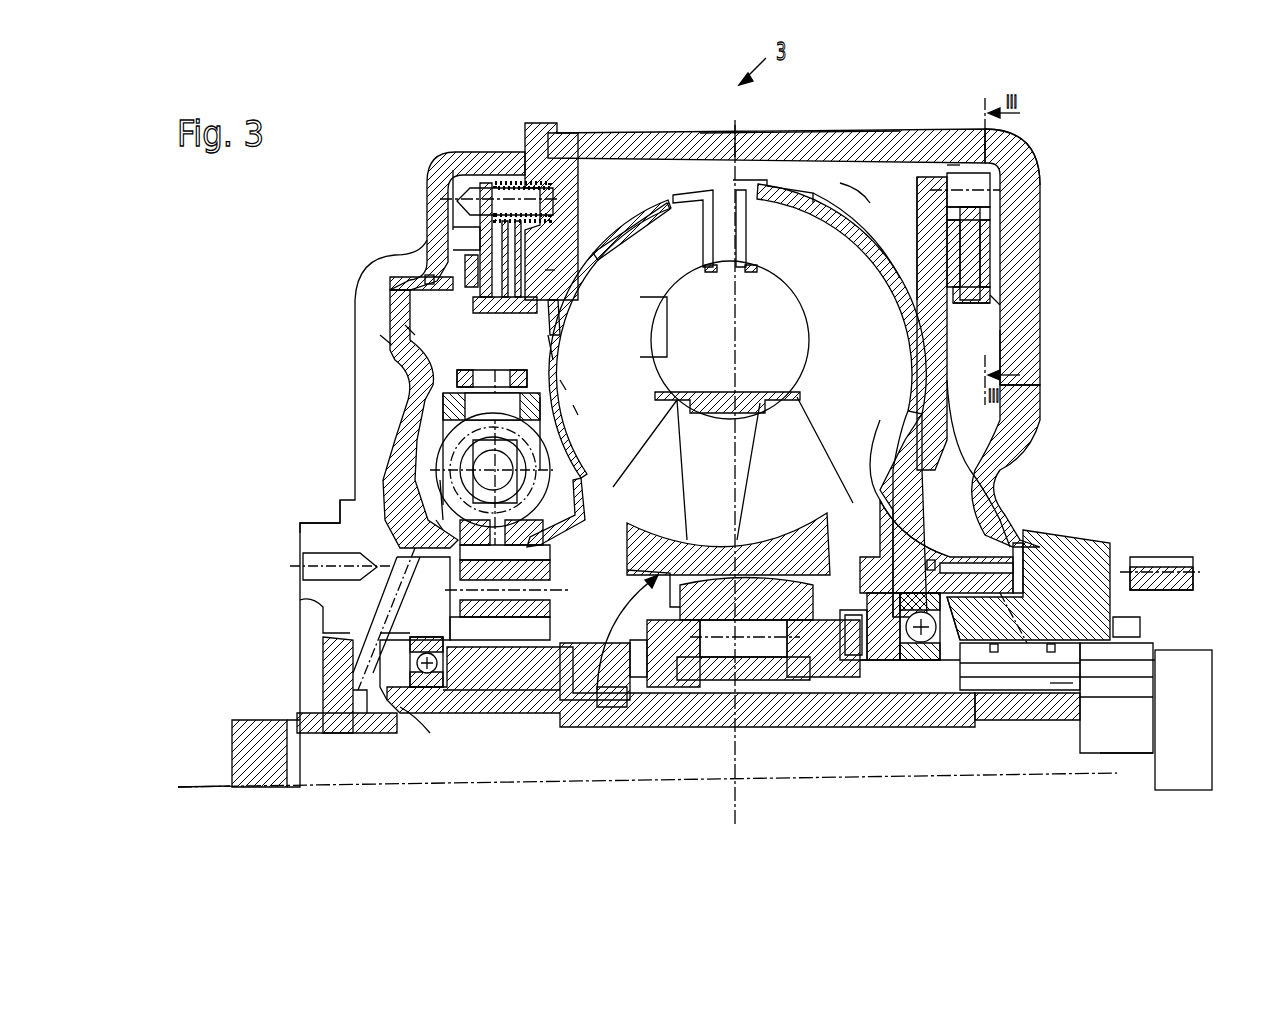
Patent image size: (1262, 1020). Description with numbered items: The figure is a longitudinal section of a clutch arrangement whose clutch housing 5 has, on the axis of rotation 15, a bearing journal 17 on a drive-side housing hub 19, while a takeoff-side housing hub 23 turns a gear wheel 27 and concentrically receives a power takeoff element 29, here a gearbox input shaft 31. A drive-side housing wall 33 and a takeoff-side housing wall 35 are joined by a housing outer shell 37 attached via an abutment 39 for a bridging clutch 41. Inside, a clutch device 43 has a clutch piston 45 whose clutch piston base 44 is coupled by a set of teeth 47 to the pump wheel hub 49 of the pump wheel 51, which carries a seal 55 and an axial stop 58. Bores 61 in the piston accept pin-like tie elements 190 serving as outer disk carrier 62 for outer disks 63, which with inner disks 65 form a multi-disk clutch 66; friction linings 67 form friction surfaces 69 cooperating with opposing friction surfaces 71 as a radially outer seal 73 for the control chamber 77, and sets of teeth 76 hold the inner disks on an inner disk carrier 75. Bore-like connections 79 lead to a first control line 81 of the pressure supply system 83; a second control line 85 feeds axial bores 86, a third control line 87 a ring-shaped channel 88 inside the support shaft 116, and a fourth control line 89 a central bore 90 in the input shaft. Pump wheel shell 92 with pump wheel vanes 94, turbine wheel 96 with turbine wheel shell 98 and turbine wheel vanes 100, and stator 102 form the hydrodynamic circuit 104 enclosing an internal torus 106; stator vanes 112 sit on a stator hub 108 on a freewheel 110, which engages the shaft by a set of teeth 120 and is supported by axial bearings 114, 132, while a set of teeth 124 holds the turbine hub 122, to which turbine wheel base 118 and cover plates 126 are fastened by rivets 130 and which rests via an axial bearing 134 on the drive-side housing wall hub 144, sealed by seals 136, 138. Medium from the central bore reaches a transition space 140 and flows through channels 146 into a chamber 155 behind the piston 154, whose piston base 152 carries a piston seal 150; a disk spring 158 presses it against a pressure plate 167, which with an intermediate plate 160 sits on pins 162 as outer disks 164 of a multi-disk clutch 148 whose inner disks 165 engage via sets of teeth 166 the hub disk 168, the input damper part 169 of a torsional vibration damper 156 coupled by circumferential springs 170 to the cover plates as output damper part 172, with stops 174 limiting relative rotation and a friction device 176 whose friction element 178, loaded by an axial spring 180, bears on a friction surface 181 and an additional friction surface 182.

The clutch housing 5 is at (794, 137).
The axis of rotation 15 is at (205, 780).
The bearing journal 17 is at (242, 740).
The drive-side housing hub 19 is at (340, 660).
The takeoff-side housing hub 23 is at (1112, 570).
The gear wheel 27 is at (1183, 580).
The power takeoff element 29 is at (1057, 710).
The gearbox input shaft 31 is at (987, 715).
The drive-side housing wall 33 is at (374, 433).
The takeoff-side housing wall 35 is at (1030, 368).
The housing outer shell 37 is at (820, 150).
The abutment 39 is at (562, 165).
The bridging clutch 41 is at (478, 237).
The clutch device 43 is at (953, 170).
The clutch piston base 44 is at (1015, 560).
The clutch piston 45 is at (950, 455).
The set of teeth 47 is at (1022, 625).
The pump wheel hub 49 is at (882, 662).
The pump wheel 51 is at (862, 185).
The seal 55 is at (907, 682).
The axial stop 58 is at (985, 560).
The bores 61 is at (920, 216).
The outer disk carrier 62 is at (985, 190).
The outer disks 63 is at (975, 213).
The inner disks 65 is at (985, 280).
The multi-disk clutch 66 is at (985, 185).
The friction linings 67 is at (985, 290).
The friction surfaces 69 is at (990, 265).
The opposing friction surfaces 71 is at (985, 255).
The radially outer seal 73 is at (975, 235).
The inner disk carrier 75 is at (1010, 340).
The sets of teeth 76 is at (990, 300).
The control chamber 77 is at (975, 405).
The bore-like connections 79 is at (1062, 655).
The first control line 81 is at (1138, 658).
The pressure supply system 83 is at (1189, 694).
The second control line 85 is at (1157, 680).
The axial bores 86 is at (1022, 720).
The third control line 87 is at (1128, 697).
The ring-shaped channel 88 is at (818, 682).
The fourth control line 89 is at (1118, 755).
The central bore 90 is at (745, 700).
The pump wheel shell 92 is at (850, 212).
The pump wheel vanes 94 is at (870, 366).
The turbine wheel 96 is at (648, 203).
The turbine wheel shell 98 is at (670, 205).
The turbine wheel vanes 100 is at (617, 359).
The stator 102 is at (585, 707).
The hydrodynamic circuit 104 is at (729, 155).
The internal torus 106 is at (715, 359).
The stator hub 108 is at (695, 625).
The freewheel 110 is at (772, 680).
The stator vanes 112 is at (722, 492).
The axial bearing 114 is at (838, 682).
The support shaft 116 is at (792, 680).
The turbine wheel base 118 is at (562, 620).
The set of teeth 120 is at (723, 660).
The turbine hub 122 is at (547, 712).
The set of teeth 124 is at (508, 720).
The cover plates 126 is at (430, 395).
The rivets 130 is at (400, 585).
The axial bearing 132 is at (655, 685).
The axial bearing 134 is at (445, 700).
The seal 136 is at (607, 702).
The seal 138 is at (408, 688).
The transition space 140 is at (360, 700).
The drive-side housing wall hub 144 is at (318, 560).
The channels 146 is at (348, 606).
The multi-disk clutch 148 is at (478, 250).
The piston seal 150 is at (338, 528).
The piston base 152 is at (460, 524).
The piston 154 is at (390, 292).
The chamber 155 is at (385, 340).
The torsional vibration damper 156 is at (423, 460).
The disk spring 158 is at (465, 262).
The intermediate plate 160 is at (455, 200).
The pins 162 is at (462, 196).
The outer disks 164 is at (515, 182).
The inner disks 165 is at (560, 283).
The sets of teeth 166 is at (550, 358).
The pressure plate 167 is at (486, 188).
The hub disk 168 is at (565, 385).
The input damper part 169 is at (578, 410).
The circumferential springs 170 is at (534, 462).
The output damper part 172 is at (410, 330).
The stops 174 is at (420, 355).
The friction device 176 is at (425, 477).
The friction element 178 is at (550, 632).
The axial spring 180 is at (605, 495).
The friction surface 181 is at (520, 565).
The additional friction surface 182 is at (545, 590).
The pin-like tie element 190 is at (935, 190).